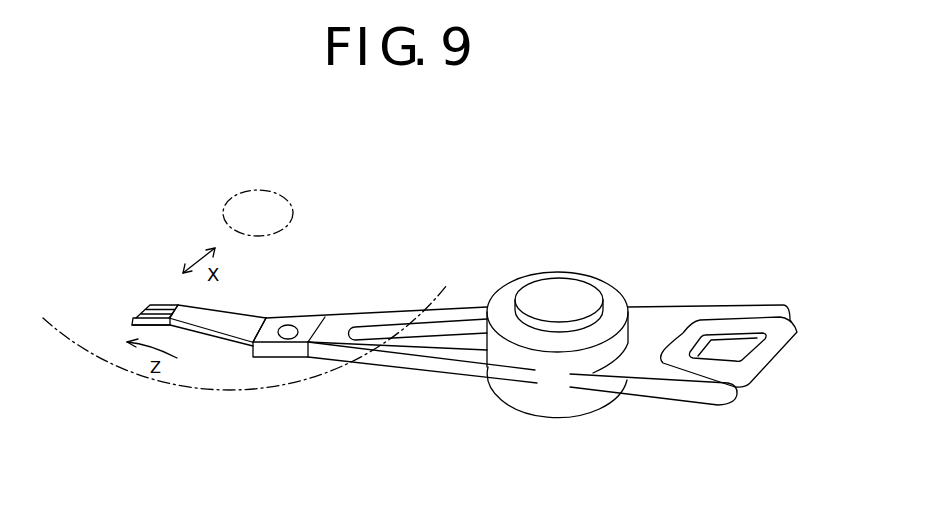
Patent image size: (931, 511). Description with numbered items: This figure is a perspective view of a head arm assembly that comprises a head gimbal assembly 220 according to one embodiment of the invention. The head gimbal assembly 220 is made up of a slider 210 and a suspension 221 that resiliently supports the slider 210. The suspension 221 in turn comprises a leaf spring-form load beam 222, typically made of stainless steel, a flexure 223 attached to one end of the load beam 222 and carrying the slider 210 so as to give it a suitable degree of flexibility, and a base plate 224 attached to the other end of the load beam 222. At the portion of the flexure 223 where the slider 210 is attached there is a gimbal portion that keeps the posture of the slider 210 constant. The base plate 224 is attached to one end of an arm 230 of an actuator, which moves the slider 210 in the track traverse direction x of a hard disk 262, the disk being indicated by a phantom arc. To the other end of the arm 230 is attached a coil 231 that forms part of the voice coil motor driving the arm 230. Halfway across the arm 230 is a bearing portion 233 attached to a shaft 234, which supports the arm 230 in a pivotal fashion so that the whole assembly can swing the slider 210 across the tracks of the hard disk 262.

The slider 210 is at (160, 303).
The head gimbal assembly 220 is at (240, 355).
The suspension 221 is at (238, 313).
The load beam 222 is at (255, 322).
The flexure 223 is at (133, 316).
The base plate 224 is at (320, 320).
The arm 230 is at (387, 358).
The coil 231 is at (776, 368).
The bearing portion 233 is at (507, 288).
The shaft 234 is at (569, 293).
The hard disk 262 is at (168, 387).